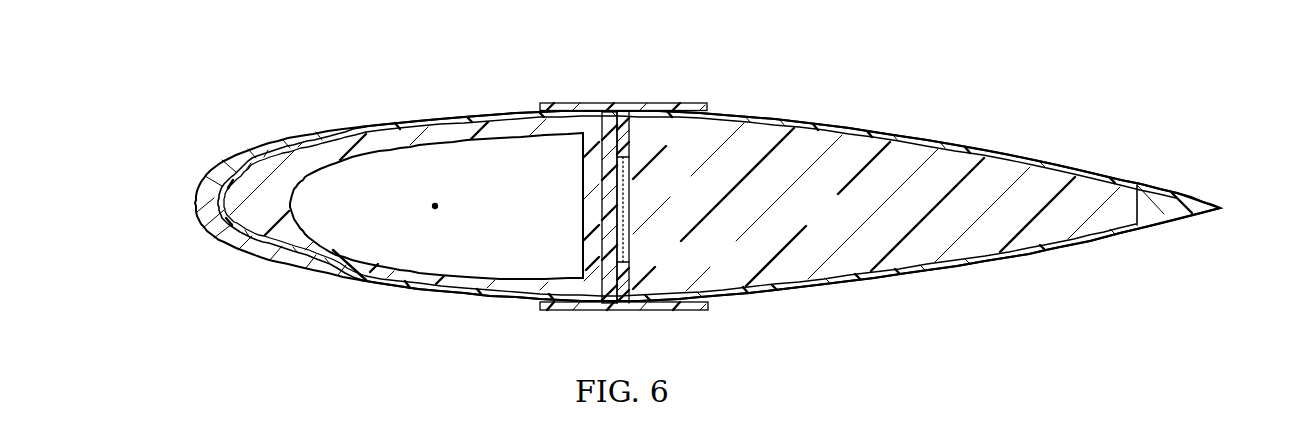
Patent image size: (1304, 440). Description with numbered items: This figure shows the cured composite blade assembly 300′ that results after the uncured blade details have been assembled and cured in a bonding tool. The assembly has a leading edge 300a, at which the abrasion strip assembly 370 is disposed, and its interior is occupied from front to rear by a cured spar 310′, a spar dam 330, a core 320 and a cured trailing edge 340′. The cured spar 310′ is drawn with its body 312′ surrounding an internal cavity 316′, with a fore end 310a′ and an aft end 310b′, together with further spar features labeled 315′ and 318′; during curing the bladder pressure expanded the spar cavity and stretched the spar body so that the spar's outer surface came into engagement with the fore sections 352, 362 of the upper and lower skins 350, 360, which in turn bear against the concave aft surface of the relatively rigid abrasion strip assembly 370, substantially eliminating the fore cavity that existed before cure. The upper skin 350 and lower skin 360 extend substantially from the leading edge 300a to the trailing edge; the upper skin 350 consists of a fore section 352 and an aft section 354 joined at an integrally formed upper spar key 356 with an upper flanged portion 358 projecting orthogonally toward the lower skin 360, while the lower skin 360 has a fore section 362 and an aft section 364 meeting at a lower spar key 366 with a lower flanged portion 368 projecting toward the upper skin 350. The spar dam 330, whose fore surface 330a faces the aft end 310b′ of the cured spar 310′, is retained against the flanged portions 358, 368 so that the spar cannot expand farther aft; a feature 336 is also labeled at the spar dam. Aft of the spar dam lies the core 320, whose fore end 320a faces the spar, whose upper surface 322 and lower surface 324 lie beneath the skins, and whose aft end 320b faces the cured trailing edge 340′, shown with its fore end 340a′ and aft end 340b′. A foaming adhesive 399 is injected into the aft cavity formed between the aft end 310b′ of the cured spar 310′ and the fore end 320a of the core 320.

The cured composite blade assembly 300′ is at (527, 70).
The leading edge 300a is at (193, 211).
The abrasion strip assembly 370 is at (263, 150).
The leading edge skin 310a′ is at (216, 199).
The cured spar 310′ is at (556, 128).
The splice joint 312′ is at (350, 138).
The cavity 316′ is at (388, 222).
The center of gravity 315′ is at (440, 206).
The core 318′ is at (526, 276).
The fore section of upper skin 352 is at (447, 118).
The aft section of upper skin 354 is at (872, 130).
The upper skin 350 is at (1002, 138).
The upper surface of core 322 is at (785, 118).
The lower surface of core 324 is at (778, 292).
The fore section of lower skin 362 is at (445, 297).
The aft section of lower skin 364 is at (862, 282).
The lower skin 360 is at (1002, 272).
The upper spar key 356 is at (625, 106).
The upper flanged portion 358 is at (626, 106).
The lower spar key 366 is at (625, 304).
The lower flanged portion 368 is at (626, 306).
The fore end of core 320a is at (612, 224).
The aft end of cured spar 310b′ is at (624, 150).
The foaming adhesive 399 is at (627, 173).
The spar dam 330 is at (626, 238).
The spar cap 336 is at (623, 282).
The fore surface of spar dam 330a is at (596, 264).
The core 320 is at (845, 220).
The aft end of core 320b is at (1144, 228).
The trailing edge upper 340a′ is at (1130, 196).
The cured trailing edge 340′ is at (1178, 216).
The trailing edge tip 340b′ is at (1223, 208).